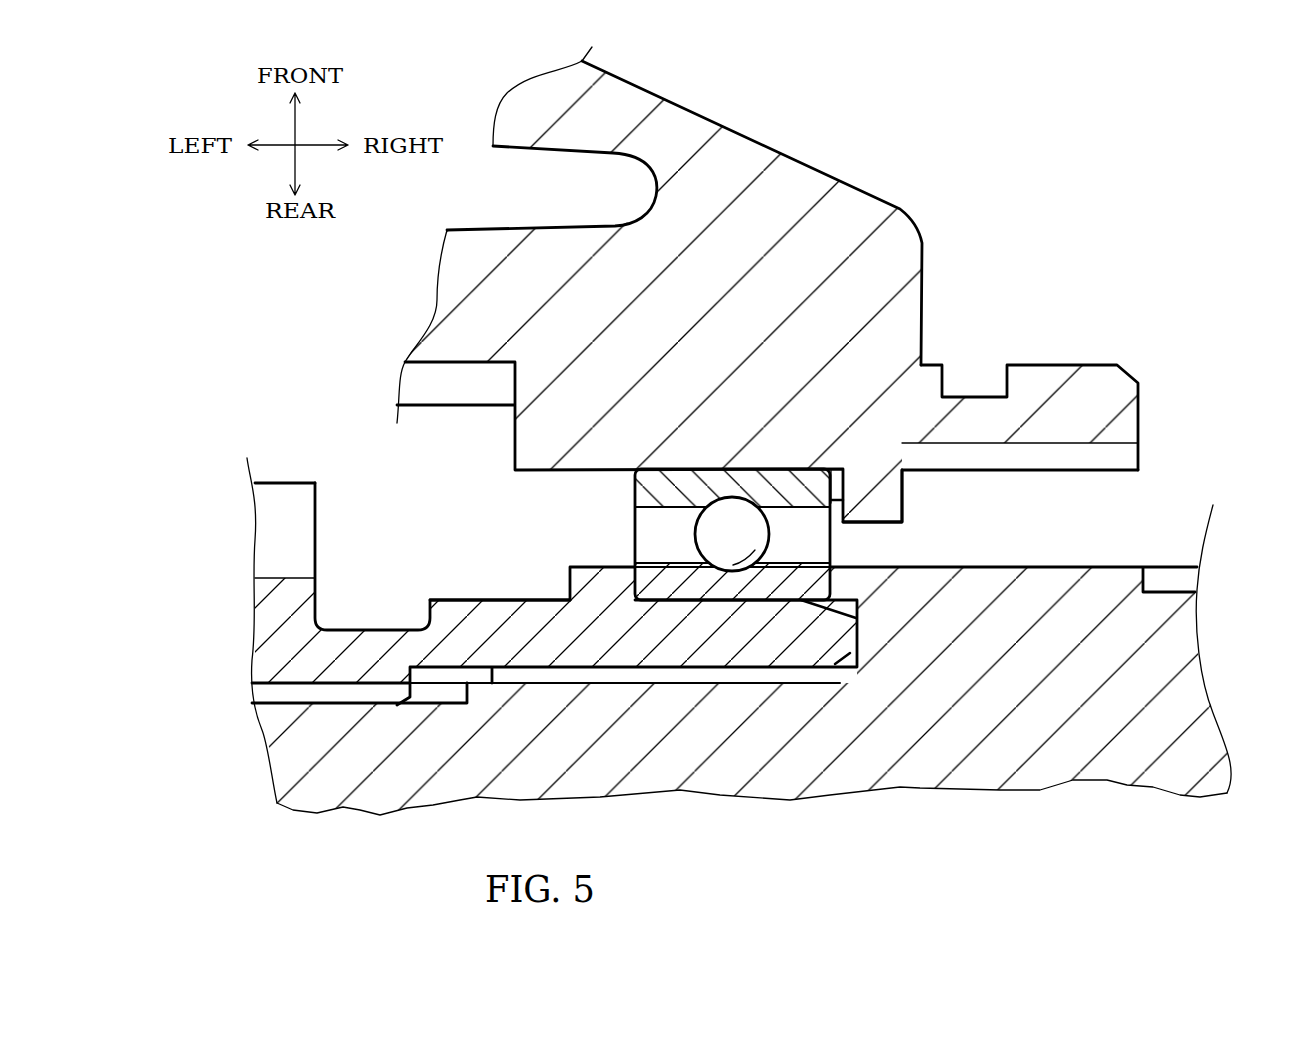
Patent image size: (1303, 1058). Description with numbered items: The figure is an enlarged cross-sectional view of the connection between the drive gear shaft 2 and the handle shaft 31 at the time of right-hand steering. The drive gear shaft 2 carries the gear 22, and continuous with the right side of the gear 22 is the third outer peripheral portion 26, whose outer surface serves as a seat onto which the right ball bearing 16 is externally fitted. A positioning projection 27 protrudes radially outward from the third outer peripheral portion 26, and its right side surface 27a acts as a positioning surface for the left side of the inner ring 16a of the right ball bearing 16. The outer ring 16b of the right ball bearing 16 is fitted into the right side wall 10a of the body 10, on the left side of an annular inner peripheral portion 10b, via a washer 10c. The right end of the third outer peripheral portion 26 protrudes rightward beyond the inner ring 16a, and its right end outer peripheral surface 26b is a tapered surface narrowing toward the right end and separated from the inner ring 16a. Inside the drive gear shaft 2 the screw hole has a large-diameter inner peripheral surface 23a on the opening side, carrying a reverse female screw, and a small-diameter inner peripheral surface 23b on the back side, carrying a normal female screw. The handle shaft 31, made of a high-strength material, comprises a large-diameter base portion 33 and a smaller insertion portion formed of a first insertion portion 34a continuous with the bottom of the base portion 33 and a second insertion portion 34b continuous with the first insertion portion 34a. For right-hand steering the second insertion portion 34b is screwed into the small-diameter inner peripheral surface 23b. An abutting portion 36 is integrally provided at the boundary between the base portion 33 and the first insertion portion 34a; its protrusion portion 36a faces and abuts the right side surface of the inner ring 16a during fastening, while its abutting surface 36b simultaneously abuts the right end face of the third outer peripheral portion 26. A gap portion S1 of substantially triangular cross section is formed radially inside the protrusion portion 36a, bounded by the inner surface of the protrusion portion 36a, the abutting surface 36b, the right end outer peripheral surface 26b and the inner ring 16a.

The body 10 is at (767, 284).
The right side wall 10a is at (733, 145).
The annular inner peripheral portion 10b is at (887, 487).
The washer 10c is at (845, 479).
The right ball bearing 16 is at (807, 387).
The inner ring 16a is at (835, 532).
The outer ring 16b is at (763, 470).
The drive gear shaft 2 is at (453, 617).
The gear 22 is at (290, 508).
The large-diameter inner peripheral surface 23a is at (553, 667).
The small-diameter inner peripheral surface 23b is at (292, 683).
The third outer peripheral portion 26 is at (693, 637).
The right end outer peripheral surface 26b is at (845, 597).
The positioning projection 27 is at (605, 590).
The right side surface 27a is at (637, 583).
The handle shaft 31 is at (746, 674).
The base portion 33 is at (743, 674).
The first insertion portion 34a is at (650, 700).
The second insertion portion 34b is at (388, 742).
The abutting portion 36 is at (1013, 685).
The protrusion portion 36a is at (845, 582).
The abutting surface 36b is at (856, 654).
The gap portion S1 is at (819, 620).